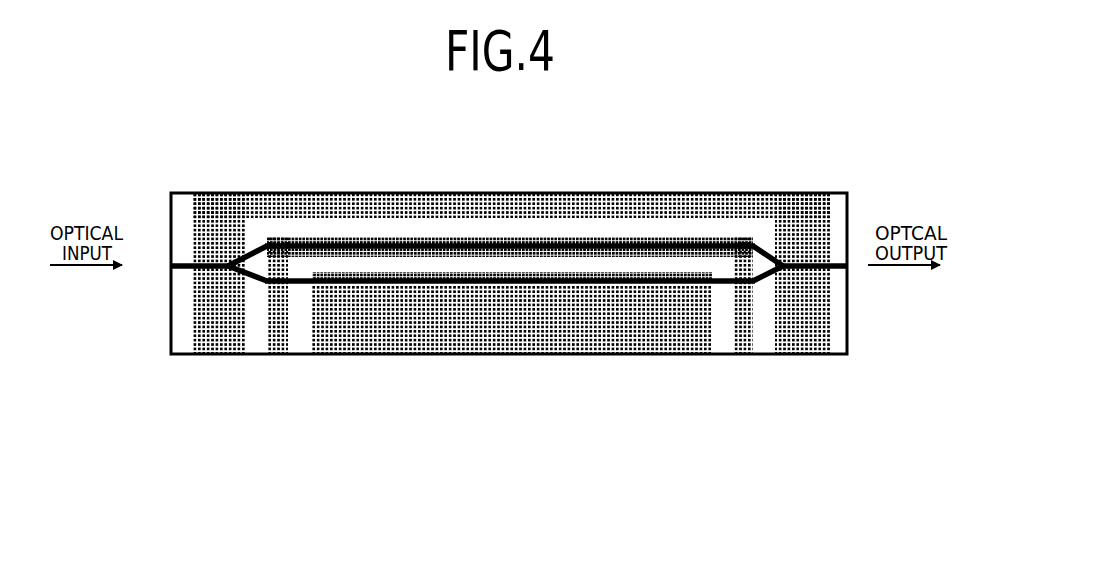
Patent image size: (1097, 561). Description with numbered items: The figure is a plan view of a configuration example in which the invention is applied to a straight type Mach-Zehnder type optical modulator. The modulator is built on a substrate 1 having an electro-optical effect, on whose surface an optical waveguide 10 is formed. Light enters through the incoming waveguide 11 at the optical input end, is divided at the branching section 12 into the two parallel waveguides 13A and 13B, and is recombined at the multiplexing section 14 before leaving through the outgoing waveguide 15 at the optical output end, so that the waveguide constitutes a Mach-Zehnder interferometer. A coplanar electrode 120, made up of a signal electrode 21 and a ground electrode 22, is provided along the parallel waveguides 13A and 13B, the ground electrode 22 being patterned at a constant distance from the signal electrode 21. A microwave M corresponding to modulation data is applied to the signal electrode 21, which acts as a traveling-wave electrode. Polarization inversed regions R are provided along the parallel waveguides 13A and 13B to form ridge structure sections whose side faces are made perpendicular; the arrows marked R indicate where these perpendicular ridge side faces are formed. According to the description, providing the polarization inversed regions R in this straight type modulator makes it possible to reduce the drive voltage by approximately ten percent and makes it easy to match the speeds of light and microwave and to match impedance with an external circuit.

The substrate 1 is at (835, 355).
The optical waveguide 10 is at (498, 284).
The incoming waveguide 11 is at (178, 262).
The branching section 12 is at (230, 260).
The parallel waveguide 13A is at (500, 243).
The parallel waveguide 13B is at (412, 242).
The multiplexing section 14 is at (790, 258).
The outgoing waveguide 15 is at (823, 260).
The signal electrode 21 is at (282, 308).
The ground electrode 22 is at (427, 342).
The coplanar electrode 120 is at (511, 334).
The polarization inversed region R is at (580, 272).
The microwave M is at (278, 376).